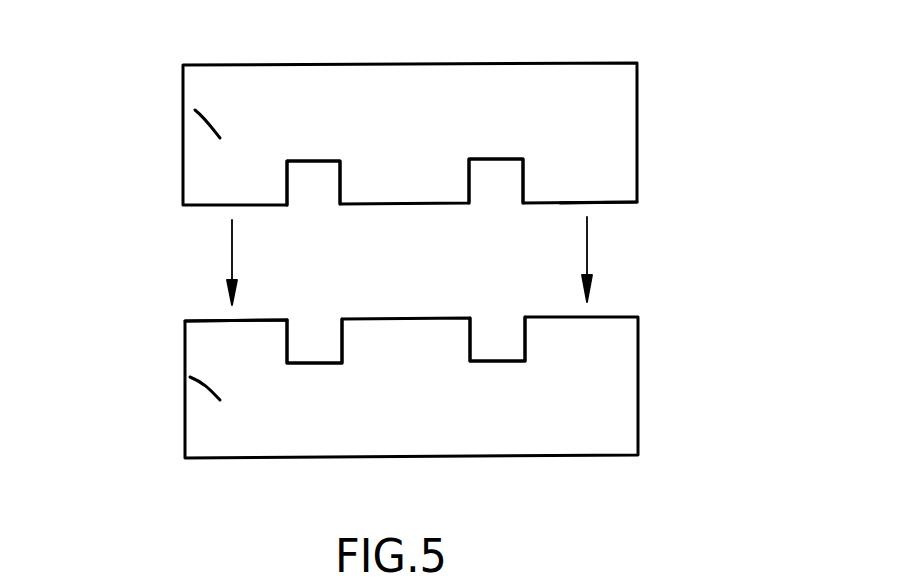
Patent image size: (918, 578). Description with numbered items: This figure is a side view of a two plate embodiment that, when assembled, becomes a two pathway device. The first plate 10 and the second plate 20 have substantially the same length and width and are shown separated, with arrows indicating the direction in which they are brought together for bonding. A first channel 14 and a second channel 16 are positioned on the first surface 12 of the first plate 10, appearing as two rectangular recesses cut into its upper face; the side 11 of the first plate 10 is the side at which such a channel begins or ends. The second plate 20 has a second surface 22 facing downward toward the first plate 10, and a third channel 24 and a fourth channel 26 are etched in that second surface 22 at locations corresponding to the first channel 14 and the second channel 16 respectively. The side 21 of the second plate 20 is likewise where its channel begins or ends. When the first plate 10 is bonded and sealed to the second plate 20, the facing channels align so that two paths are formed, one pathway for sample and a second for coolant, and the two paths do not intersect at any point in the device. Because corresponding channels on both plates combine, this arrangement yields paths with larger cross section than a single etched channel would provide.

The first plate 10 is at (184, 437).
The side of the first plate 11 is at (187, 375).
The first surface 12 is at (222, 320).
The first channel 14 is at (310, 363).
The second channel 16 is at (502, 361).
The second plate 20 is at (638, 123).
The side of the second plate 21 is at (195, 110).
The second surface 22 is at (592, 204).
The third channel 24 is at (312, 161).
The fourth channel 26 is at (499, 159).